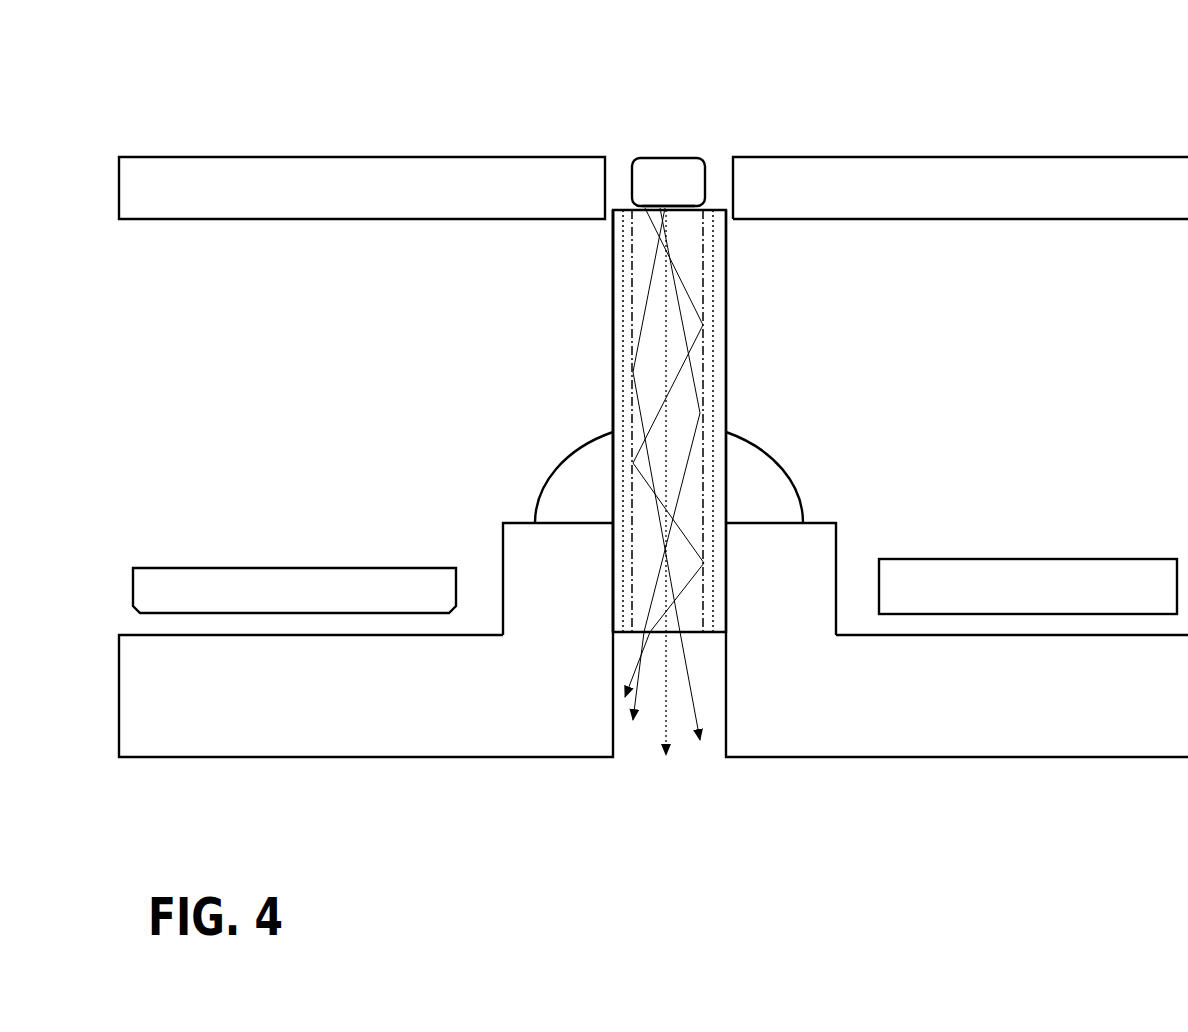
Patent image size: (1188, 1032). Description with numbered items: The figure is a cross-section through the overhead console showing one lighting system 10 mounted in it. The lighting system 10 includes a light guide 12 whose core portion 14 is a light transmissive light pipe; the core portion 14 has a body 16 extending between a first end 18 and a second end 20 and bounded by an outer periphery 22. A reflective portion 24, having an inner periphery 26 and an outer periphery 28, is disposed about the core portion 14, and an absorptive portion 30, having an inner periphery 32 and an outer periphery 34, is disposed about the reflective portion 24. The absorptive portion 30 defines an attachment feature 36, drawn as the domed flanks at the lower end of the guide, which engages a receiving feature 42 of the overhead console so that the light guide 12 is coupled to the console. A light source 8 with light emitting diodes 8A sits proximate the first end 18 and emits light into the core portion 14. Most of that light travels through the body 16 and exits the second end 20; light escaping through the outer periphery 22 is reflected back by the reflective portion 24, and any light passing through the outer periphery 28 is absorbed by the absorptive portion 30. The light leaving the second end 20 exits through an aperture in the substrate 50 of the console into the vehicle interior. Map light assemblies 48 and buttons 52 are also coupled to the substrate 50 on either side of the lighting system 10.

The lighting system 10 is at (800, 82).
The light guide 12 is at (606, 410).
The light source 8 is at (656, 152).
The light emitting diodes 8A is at (668, 192).
The core portion 14 is at (682, 620).
The body 16 is at (682, 434).
The first end 18 is at (636, 222).
The second end 20 is at (652, 637).
The outer periphery 22 is at (704, 486).
The reflective portion 24 is at (703, 280).
The inner periphery 26 is at (711, 245).
The outer periphery 28 is at (714, 310).
The absorptive portion 30 is at (618, 258).
The inner periphery 32 is at (621, 315).
The outer periphery 34 is at (610, 345).
The attachment feature 36 is at (566, 501).
The receiving feature 42 is at (541, 571).
The map light assemblies 48 is at (259, 606).
The substrate 50 is at (259, 716).
The buttons 52 is at (1004, 598).